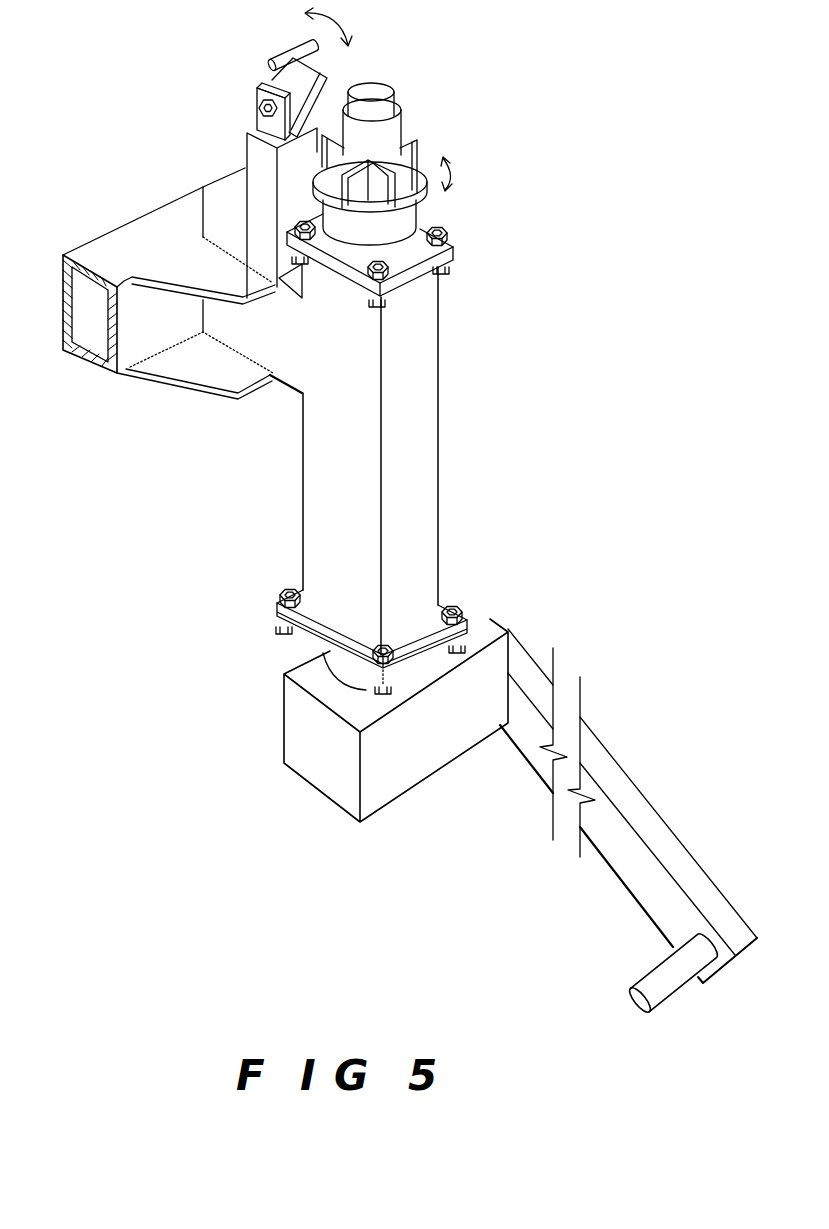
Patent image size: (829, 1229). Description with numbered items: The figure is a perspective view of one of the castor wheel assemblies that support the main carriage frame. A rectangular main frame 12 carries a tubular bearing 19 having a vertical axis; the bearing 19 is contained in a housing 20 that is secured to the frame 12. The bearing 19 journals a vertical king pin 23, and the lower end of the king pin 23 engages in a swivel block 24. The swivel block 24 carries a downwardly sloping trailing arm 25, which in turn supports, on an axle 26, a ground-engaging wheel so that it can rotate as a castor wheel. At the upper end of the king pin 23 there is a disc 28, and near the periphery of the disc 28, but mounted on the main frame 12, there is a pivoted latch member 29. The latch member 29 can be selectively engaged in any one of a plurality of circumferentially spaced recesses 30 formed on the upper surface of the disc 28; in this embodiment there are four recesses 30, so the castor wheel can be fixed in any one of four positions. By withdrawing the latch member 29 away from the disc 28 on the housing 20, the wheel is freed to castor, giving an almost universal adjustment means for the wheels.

The main frame 12 is at (136, 232).
The tubular bearing 19 is at (402, 118).
The housing 20 is at (423, 432).
The king pin 23 is at (377, 87).
The swivel block 24 is at (408, 747).
The trailing arm 25 is at (655, 818).
The axle 26 is at (671, 1000).
The disc 28 is at (423, 199).
The latch member 29 is at (297, 73).
The recess 30 is at (421, 160).